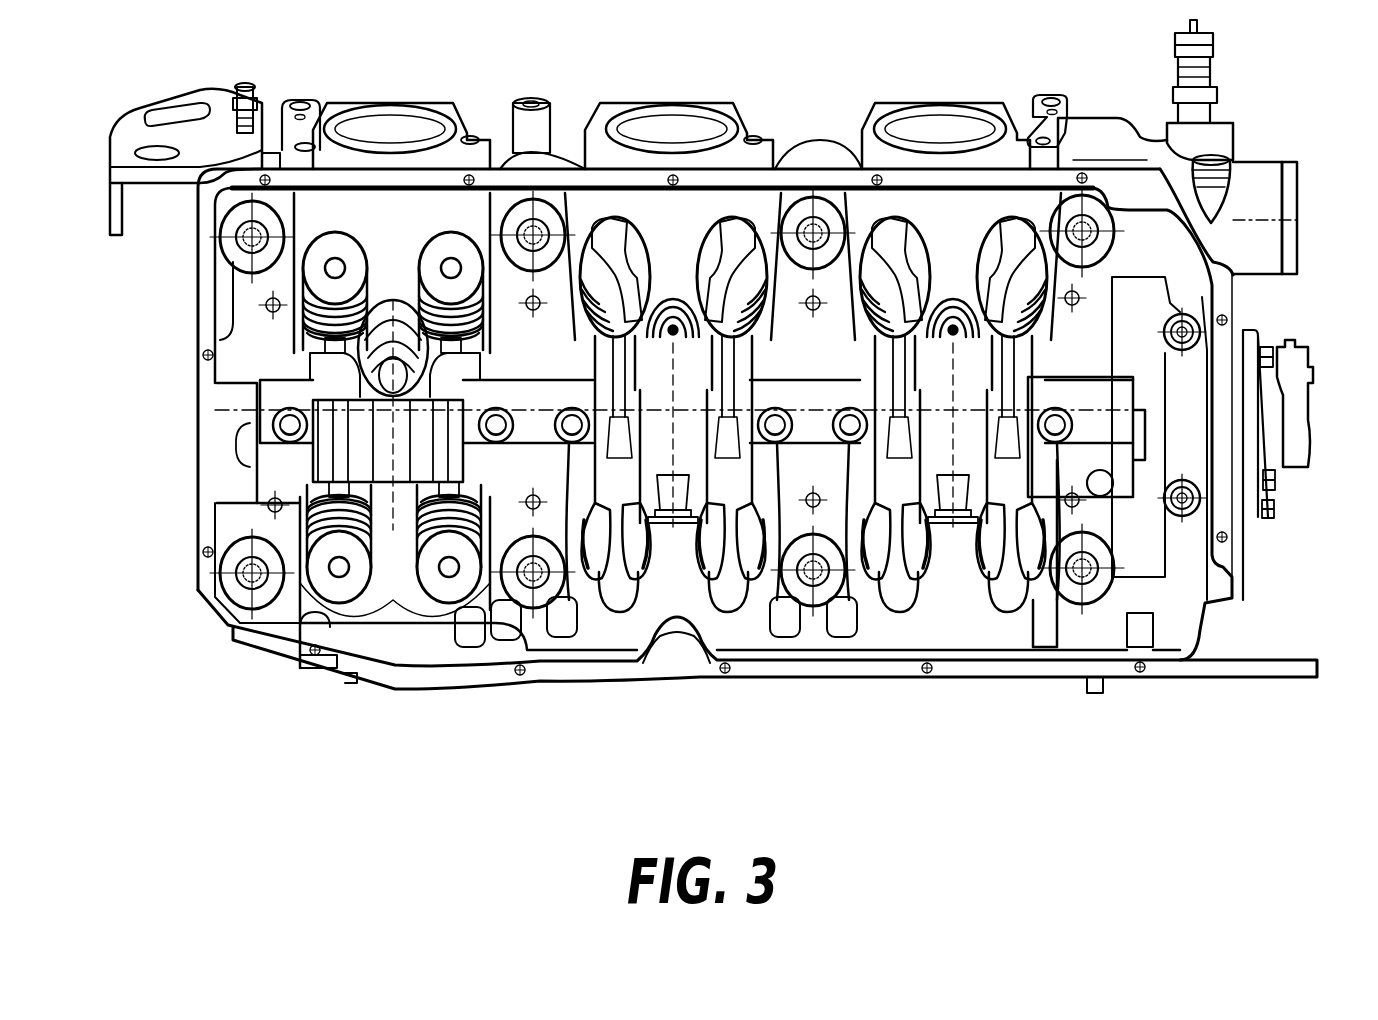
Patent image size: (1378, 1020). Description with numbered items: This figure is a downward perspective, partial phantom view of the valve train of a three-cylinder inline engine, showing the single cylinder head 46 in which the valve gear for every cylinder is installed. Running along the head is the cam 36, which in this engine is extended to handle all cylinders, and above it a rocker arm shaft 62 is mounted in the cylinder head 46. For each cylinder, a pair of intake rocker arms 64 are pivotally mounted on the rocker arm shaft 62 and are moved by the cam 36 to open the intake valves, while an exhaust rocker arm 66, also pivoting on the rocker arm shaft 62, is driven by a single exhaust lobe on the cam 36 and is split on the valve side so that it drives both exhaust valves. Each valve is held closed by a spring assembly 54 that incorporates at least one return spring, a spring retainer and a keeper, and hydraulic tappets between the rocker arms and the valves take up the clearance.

The cam 36 is at (357, 463).
The cylinder head 46 is at (1028, 630).
The spring assembly 54 is at (443, 600).
The rocker arm shaft 62 is at (1095, 383).
The intake rocker arms 64 is at (1008, 590).
The exhaust rocker arm 66 is at (951, 340).